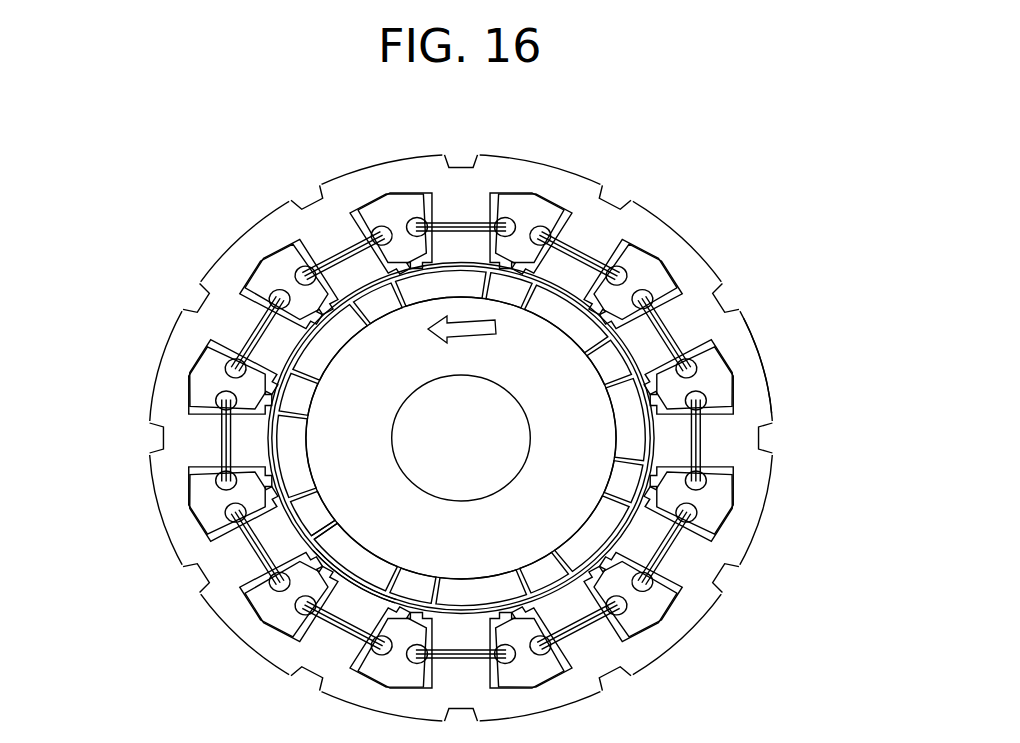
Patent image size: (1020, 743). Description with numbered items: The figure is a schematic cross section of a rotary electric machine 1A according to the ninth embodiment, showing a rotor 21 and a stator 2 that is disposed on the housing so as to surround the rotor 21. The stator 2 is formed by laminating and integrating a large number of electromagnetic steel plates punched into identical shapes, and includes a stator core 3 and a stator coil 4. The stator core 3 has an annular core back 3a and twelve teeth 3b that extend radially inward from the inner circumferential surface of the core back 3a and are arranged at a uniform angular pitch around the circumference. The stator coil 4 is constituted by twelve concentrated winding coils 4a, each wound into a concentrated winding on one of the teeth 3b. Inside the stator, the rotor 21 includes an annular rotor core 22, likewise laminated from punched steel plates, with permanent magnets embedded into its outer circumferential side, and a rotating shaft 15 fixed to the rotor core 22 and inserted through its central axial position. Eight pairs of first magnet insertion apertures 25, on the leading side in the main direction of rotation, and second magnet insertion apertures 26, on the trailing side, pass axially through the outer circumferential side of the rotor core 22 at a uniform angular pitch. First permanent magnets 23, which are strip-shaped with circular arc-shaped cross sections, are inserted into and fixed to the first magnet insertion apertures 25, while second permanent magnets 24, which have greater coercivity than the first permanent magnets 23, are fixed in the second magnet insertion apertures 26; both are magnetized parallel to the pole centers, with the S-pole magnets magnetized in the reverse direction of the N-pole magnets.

The rotary electric machine 1A is at (142, 108).
The stator 2 is at (753, 207).
The stator core 3 is at (702, 257).
The core back 3a is at (755, 382).
The teeth 3b is at (713, 442).
The stator coil 4 is at (674, 328).
The concentrated winding coils 4a is at (678, 545).
The rotating shaft 15 is at (512, 442).
The rotor 21 is at (294, 359).
The rotor core 22 is at (328, 414).
The first permanent magnets 23 is at (350, 575).
The second permanent magnets 24 is at (315, 542).
The first magnet insertion apertures 25 is at (360, 573).
The second magnet insertion apertures 26 is at (312, 512).